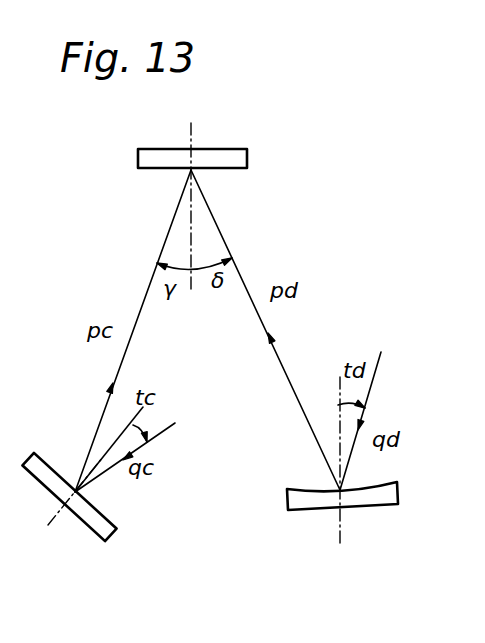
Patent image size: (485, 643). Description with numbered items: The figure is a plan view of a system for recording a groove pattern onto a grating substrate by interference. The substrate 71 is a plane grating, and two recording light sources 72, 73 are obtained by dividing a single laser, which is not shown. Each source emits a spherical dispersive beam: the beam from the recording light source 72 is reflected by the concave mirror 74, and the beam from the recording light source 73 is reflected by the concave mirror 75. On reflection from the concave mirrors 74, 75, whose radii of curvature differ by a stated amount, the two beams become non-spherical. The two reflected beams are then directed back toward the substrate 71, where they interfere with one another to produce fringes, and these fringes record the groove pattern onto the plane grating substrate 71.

The substrate 71 is at (230, 149).
The recording light source 72 is at (175, 423).
The recording light source 73 is at (381, 352).
The concave mirror 74 is at (101, 540).
The concave mirror 75 is at (307, 510).